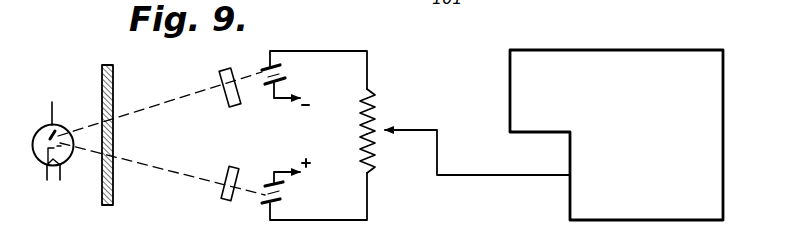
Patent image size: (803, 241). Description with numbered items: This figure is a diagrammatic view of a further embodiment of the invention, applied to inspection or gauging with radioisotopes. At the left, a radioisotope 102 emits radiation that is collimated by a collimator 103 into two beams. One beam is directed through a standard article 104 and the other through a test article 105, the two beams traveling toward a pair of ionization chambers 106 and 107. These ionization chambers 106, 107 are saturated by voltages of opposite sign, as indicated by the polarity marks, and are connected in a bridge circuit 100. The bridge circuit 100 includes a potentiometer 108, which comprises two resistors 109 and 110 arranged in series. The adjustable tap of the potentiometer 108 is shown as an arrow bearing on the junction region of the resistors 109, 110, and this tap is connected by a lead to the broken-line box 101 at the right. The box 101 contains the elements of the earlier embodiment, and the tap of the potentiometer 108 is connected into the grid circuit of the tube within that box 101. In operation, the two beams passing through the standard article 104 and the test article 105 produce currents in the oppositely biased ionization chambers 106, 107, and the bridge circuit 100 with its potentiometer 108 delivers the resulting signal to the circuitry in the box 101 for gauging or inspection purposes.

The bridge circuit 100 is at (392, 37).
The broken-line box 101 is at (577, 50).
The radioisotope 102 is at (58, 129).
The collimator 103 is at (113, 135).
The standard article 104 is at (222, 82).
The test article 105 is at (222, 192).
The ionization chamber 106 is at (278, 84).
The ionization chamber 107 is at (278, 184).
The potentiometer 108 is at (384, 146).
The resistor 109 is at (375, 100).
The resistor 110 is at (368, 173).